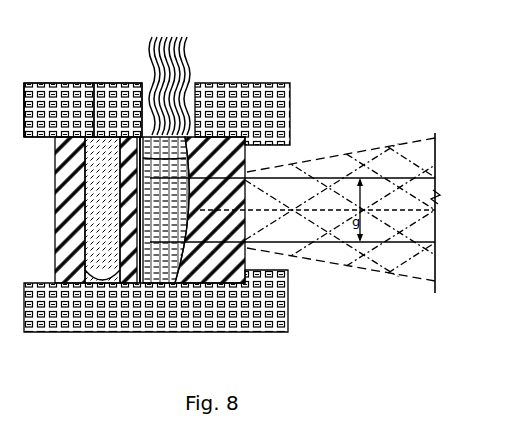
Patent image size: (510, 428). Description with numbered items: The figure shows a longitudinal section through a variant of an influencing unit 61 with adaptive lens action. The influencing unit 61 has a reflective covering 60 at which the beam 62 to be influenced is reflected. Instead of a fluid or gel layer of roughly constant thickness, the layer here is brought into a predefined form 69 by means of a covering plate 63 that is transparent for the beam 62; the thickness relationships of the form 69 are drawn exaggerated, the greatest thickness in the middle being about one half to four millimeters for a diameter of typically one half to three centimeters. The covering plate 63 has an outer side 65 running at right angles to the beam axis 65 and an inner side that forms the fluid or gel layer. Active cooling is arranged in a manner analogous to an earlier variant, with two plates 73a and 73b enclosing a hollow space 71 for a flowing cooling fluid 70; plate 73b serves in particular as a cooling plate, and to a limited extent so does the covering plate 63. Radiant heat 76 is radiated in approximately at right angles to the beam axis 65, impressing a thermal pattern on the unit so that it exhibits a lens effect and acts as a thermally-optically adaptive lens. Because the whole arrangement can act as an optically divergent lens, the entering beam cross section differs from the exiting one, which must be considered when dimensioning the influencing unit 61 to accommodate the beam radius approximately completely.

The influencing unit 61 is at (290, 63).
The plate 73a is at (67, 140).
The plate 73b is at (125, 140).
The radiant heat 76 is at (172, 58).
The hollow space 71 is at (102, 272).
The cooling fluid 70 is at (102, 210).
The reflective covering 60 is at (138, 283).
The fluid or gel layer form 69 is at (160, 272).
The covering plate 63 is at (210, 210).
The beam 62 is at (425, 184).
The outer side / beam axis 65 is at (435, 212).